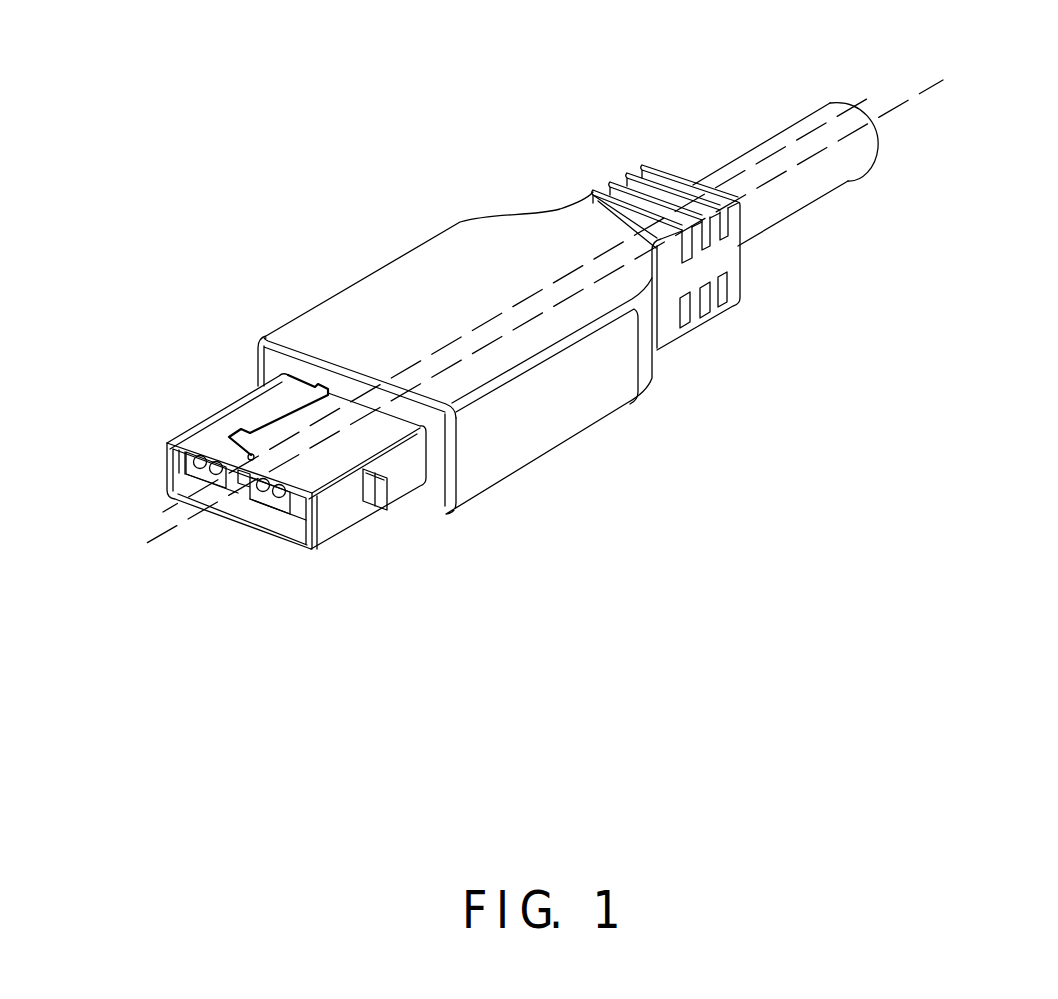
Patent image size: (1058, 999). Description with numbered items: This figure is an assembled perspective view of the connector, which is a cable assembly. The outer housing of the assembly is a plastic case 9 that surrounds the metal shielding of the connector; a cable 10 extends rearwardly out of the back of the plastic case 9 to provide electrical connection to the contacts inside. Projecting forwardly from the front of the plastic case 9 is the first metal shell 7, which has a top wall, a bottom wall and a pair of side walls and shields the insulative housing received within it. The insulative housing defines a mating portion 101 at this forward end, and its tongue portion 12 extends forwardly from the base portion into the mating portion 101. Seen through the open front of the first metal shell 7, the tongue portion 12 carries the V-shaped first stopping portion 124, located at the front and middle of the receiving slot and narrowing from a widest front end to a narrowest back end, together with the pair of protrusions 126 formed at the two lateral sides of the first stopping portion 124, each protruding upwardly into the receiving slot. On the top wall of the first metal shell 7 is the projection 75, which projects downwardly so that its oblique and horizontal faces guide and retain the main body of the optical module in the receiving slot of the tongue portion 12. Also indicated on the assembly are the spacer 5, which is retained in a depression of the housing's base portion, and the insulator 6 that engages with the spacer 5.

The spacer 5 is at (885, 58).
The insulator 6 is at (822, 75).
The first metal shell 7 is at (217, 418).
The plastic case 9 is at (490, 247).
The cable 10 is at (802, 190).
The tongue portion 12 is at (307, 550).
The projection 75 is at (229, 437).
The mating portion 101 is at (276, 520).
The V-shaped first stopping portion 124 is at (250, 478).
The protrusions 126 is at (250, 500).